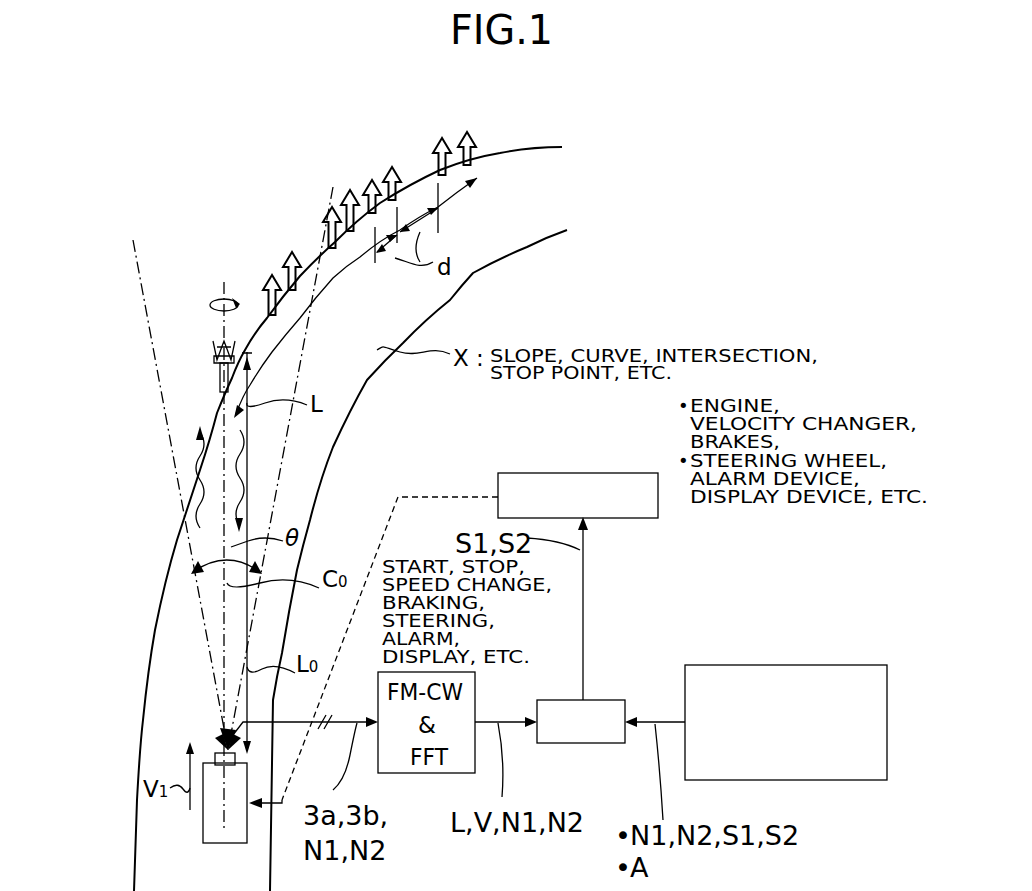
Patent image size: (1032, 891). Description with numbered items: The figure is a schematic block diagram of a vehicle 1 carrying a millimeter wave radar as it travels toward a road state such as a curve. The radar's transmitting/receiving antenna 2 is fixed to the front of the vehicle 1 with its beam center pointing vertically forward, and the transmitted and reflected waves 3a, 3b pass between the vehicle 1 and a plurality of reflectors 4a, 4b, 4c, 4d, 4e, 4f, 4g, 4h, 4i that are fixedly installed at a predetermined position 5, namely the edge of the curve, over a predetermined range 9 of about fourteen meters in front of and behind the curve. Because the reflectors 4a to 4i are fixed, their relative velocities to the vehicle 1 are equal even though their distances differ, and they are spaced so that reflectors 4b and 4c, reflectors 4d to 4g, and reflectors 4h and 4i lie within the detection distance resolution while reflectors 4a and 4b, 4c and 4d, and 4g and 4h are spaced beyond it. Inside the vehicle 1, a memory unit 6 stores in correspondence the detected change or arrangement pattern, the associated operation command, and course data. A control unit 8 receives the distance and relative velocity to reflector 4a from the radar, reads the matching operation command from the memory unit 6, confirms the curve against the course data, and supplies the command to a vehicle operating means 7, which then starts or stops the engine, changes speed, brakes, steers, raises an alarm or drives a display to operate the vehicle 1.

The vehicle 1 is at (207, 830).
The transmitting/receiving antenna 2 is at (213, 750).
The transmitted radio wave 3a is at (200, 463).
The reflected radio wave 3b is at (243, 450).
The reflector 4a is at (214, 345).
The reflector 4b is at (268, 278).
The reflector 4c is at (291, 251).
The reflector 4d is at (331, 206).
The reflector 4e is at (350, 189).
The reflector 4f is at (372, 179).
The reflector 4g is at (393, 166).
The reflector 4h is at (443, 137).
The reflector 4i is at (468, 131).
The predetermined position (edge) 5 is at (222, 395).
The memory unit 6 is at (780, 665).
The vehicle operating means 7 is at (651, 473).
The control unit 8 is at (553, 700).
The predetermined range 9 is at (350, 262).